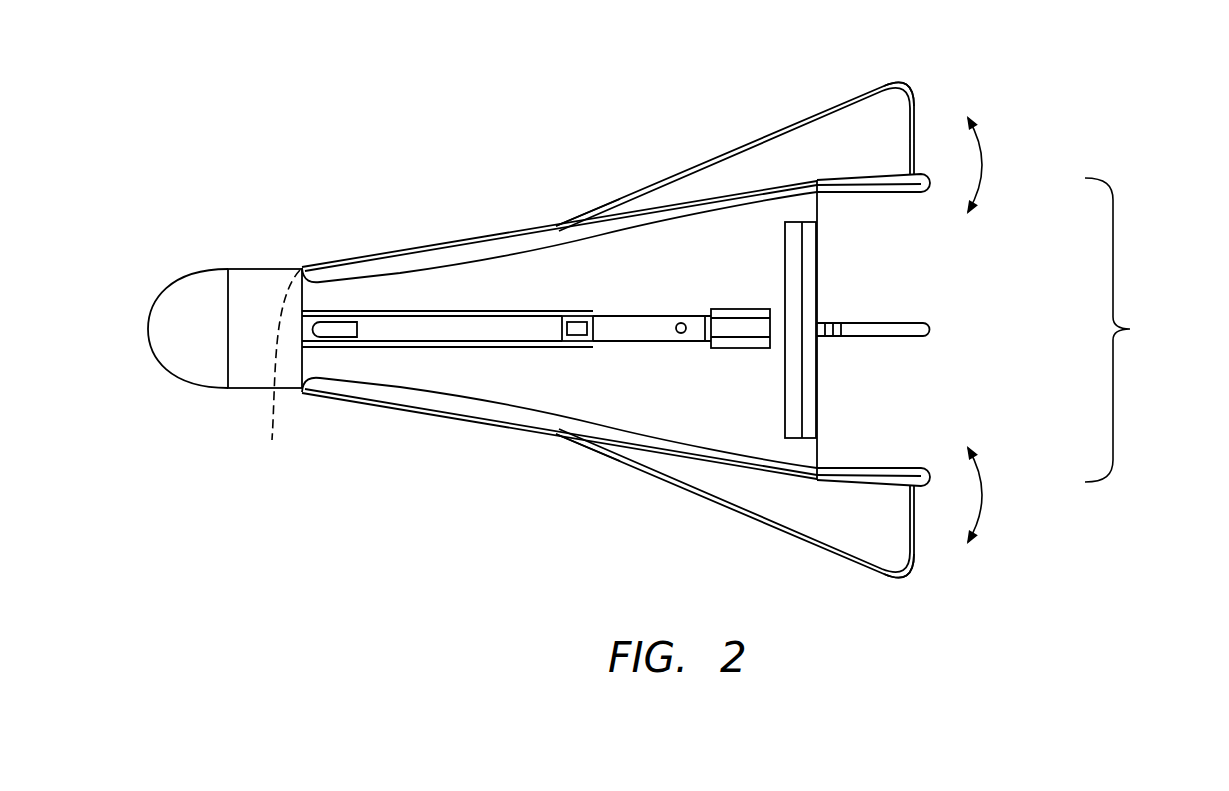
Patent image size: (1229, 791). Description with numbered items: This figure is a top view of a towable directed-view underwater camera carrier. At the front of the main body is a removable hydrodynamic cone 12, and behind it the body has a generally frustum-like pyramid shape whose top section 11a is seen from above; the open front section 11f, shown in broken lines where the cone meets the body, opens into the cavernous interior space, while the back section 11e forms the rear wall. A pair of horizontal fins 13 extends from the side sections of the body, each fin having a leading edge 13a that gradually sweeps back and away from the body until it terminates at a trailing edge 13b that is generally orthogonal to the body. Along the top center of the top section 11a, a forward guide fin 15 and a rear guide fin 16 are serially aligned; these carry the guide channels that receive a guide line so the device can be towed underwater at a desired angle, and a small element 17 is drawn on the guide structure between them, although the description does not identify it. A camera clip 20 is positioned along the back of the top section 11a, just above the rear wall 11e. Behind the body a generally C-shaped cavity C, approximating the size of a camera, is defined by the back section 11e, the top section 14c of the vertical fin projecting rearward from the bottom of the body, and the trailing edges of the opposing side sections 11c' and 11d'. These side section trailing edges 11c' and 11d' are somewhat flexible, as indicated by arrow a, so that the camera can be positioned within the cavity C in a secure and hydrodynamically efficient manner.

The hydrodynamic cone 12 is at (213, 337).
The top section 11a is at (677, 291).
The trailing edge of side section 11c' is at (888, 220).
The trailing edge of side section 11d' is at (873, 434).
The back section 11e is at (818, 293).
The open front section 11f is at (263, 369).
The horizontal fins 13 is at (863, 157).
The leading edge 13a is at (616, 196).
The trailing edge 13b is at (917, 104).
The top section of vertical fin 14c is at (925, 328).
The forward guide fin 15 is at (440, 310).
The rear guide fin 16 is at (738, 332).
The pin 17 is at (676, 334).
The camera clip 20 is at (788, 255).
The arrow a is at (983, 163).
The cavity C is at (1120, 330).